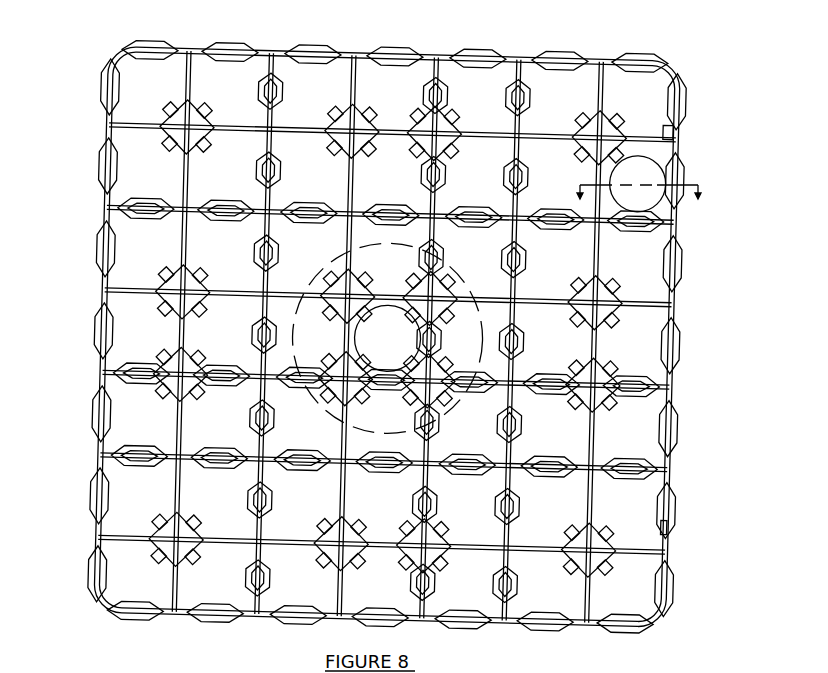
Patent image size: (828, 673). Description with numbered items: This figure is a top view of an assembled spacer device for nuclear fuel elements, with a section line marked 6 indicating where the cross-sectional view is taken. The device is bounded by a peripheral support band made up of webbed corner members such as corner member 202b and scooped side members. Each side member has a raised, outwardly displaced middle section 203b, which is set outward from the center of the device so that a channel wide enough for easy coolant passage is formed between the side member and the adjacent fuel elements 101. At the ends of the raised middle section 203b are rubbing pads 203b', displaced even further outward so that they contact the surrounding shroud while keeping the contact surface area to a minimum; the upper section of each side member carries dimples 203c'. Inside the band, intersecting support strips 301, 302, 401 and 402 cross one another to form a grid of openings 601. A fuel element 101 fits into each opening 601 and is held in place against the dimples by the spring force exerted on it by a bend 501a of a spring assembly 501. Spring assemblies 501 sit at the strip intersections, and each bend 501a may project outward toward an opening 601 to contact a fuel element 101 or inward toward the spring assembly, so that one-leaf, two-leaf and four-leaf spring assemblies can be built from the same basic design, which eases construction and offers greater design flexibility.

The fuel element 101 is at (668, 170).
The frame corner member 202b is at (662, 627).
The raised outwardly displaced middle section 203b is at (420, 336).
The rubbing pads 203b' is at (389, 338).
The dimples 203c' is at (703, 530).
The support strip 301 is at (276, 62).
The support strip 302 is at (128, 208).
The support strip 401 is at (606, 82).
The support strip 402 is at (663, 132).
The spring assembly 501 is at (338, 276).
The bend 501a is at (645, 164).
The opening 601 is at (655, 220).
The section line 6- 6 is at (638, 200).